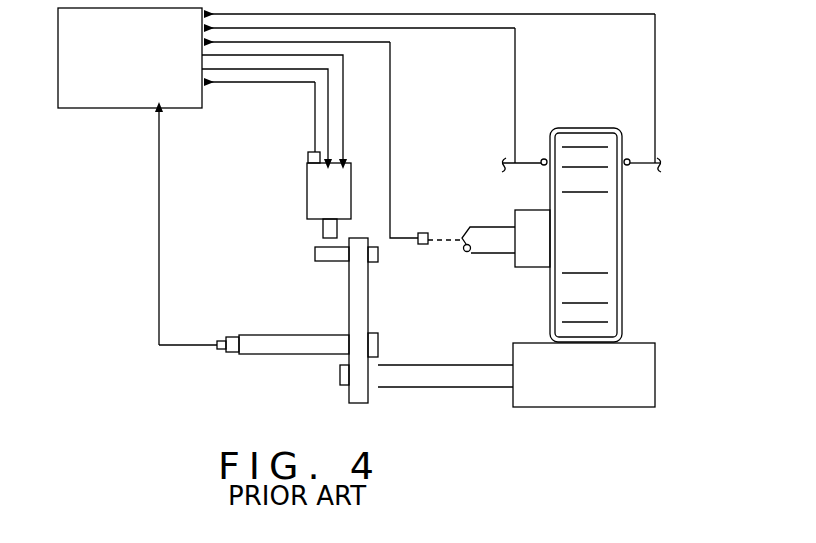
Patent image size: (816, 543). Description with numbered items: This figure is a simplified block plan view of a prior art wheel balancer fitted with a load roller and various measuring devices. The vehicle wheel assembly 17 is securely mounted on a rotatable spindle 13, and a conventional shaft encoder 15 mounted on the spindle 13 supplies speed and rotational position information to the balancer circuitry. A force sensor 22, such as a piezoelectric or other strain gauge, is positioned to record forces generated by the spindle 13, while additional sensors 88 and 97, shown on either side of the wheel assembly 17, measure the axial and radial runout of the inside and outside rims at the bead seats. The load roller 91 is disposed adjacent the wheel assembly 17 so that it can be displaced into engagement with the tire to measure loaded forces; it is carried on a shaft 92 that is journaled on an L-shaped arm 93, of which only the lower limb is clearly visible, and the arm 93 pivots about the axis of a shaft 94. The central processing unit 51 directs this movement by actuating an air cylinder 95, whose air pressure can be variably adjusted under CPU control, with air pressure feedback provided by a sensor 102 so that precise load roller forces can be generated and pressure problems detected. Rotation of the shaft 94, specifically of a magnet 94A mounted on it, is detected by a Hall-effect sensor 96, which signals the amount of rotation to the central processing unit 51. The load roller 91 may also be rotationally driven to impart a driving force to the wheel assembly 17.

The central processing unit 51 is at (75, 110).
The sensor 102 is at (308, 158).
The air cylinder 95 is at (306, 210).
The L-shaped arm 93 is at (369, 305).
The shaft 94 is at (318, 356).
The magnet 94A is at (233, 335).
The sensor 96 is at (219, 350).
The shaft 92 is at (475, 388).
The load roller 91 is at (540, 407).
The wheel assembly 17 is at (594, 128).
The shaft encoder 15 is at (540, 268).
The spindle 13 is at (490, 255).
The force sensor 22 is at (422, 233).
The sensor 88 is at (528, 170).
The sensor 97 is at (645, 170).